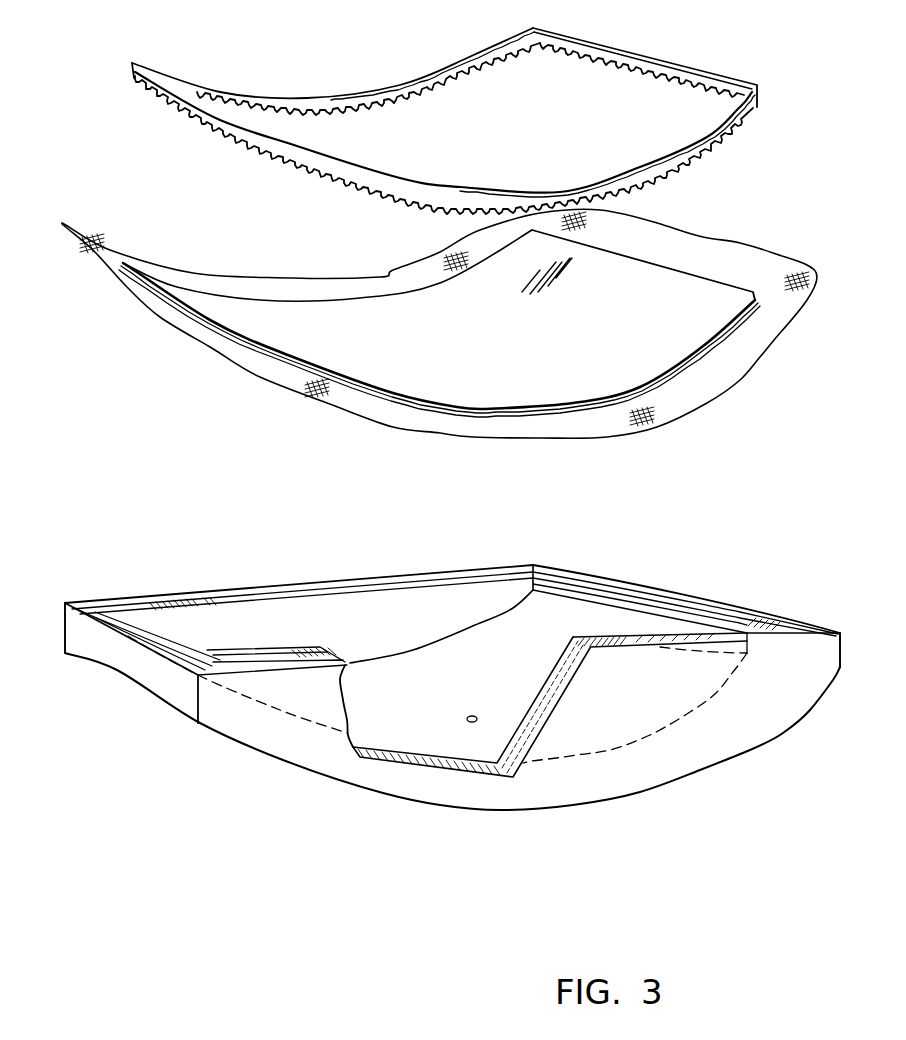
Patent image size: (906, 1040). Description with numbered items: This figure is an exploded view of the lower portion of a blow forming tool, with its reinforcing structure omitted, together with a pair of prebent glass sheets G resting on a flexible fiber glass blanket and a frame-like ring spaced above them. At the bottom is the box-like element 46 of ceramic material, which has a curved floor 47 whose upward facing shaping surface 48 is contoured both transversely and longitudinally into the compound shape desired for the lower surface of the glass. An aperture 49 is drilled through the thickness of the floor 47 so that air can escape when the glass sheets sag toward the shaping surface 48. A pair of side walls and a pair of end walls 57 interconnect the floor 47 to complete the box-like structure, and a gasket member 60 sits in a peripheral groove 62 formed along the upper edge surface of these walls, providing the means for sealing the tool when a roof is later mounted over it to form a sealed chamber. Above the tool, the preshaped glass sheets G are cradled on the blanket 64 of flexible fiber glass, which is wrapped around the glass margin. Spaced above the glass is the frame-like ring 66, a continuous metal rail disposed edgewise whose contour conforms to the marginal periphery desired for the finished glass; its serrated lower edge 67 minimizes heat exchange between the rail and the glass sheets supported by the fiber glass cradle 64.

The frame-like ring 66 is at (270, 90).
The serrated lower edge 67 is at (390, 106).
The fabric garment piece G is at (439, 316).
The blanket 64 is at (760, 360).
The box-like element 46 is at (223, 745).
The curved floor 47 is at (507, 637).
The upward facing shaping surface 48 is at (417, 720).
The aperture 49 is at (475, 717).
The end walls 57 is at (123, 667).
The gasket member 60 is at (157, 603).
The peripheral groove 62 is at (283, 593).